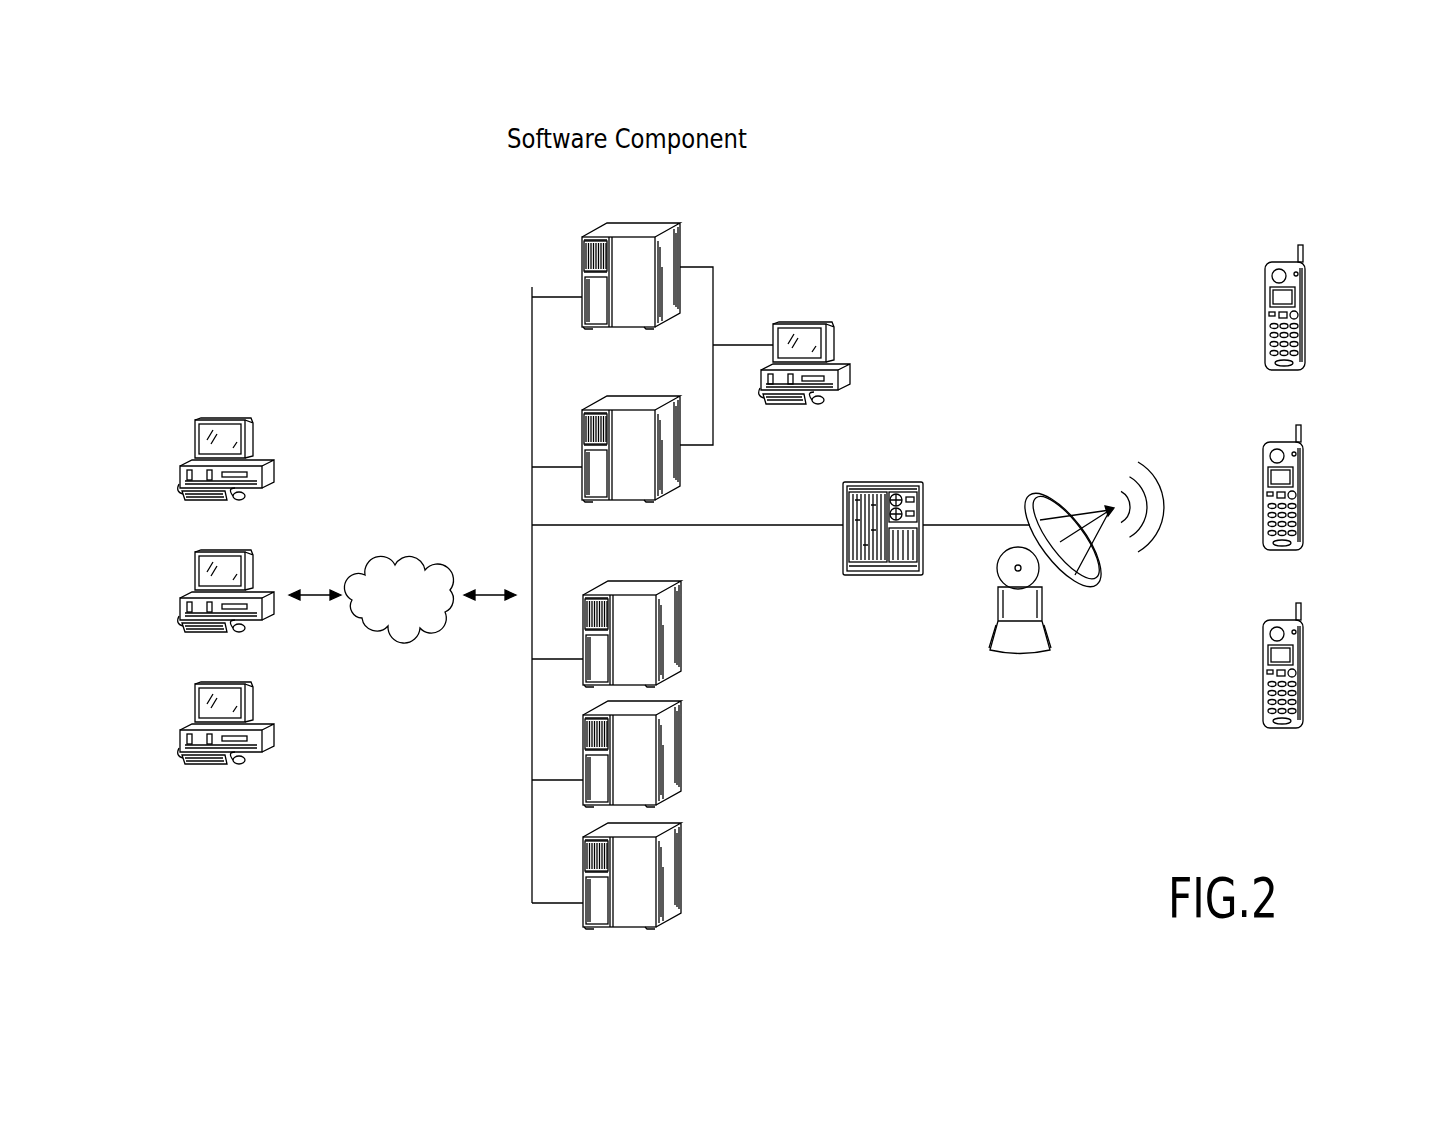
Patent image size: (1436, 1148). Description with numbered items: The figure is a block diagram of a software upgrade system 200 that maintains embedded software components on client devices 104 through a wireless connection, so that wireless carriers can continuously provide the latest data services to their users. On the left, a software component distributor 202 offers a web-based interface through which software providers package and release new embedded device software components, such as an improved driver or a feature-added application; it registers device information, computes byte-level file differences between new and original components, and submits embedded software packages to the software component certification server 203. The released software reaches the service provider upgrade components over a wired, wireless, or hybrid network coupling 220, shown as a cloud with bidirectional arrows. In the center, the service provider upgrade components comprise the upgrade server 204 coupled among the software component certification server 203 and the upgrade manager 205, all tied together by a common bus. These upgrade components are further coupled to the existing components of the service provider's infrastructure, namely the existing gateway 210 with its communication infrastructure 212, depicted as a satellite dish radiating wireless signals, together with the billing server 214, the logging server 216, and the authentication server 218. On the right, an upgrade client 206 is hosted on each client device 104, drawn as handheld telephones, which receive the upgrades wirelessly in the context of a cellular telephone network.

The upgrade system 200 is at (1055, 148).
The software component distributor 202 is at (253, 375).
The software component certification server 203 is at (582, 253).
The upgrade server 204 is at (682, 465).
The upgrade manager 205 is at (833, 344).
The upgrade client 206 is at (1304, 226).
The client device 104 is at (1307, 316).
The existing gateway 210 is at (893, 577).
The communication infrastructure 212 is at (1035, 492).
The billing server 214 is at (657, 655).
The logging server 216 is at (657, 775).
The authentication server 218 is at (657, 897).
The network coupling 220 is at (401, 558).